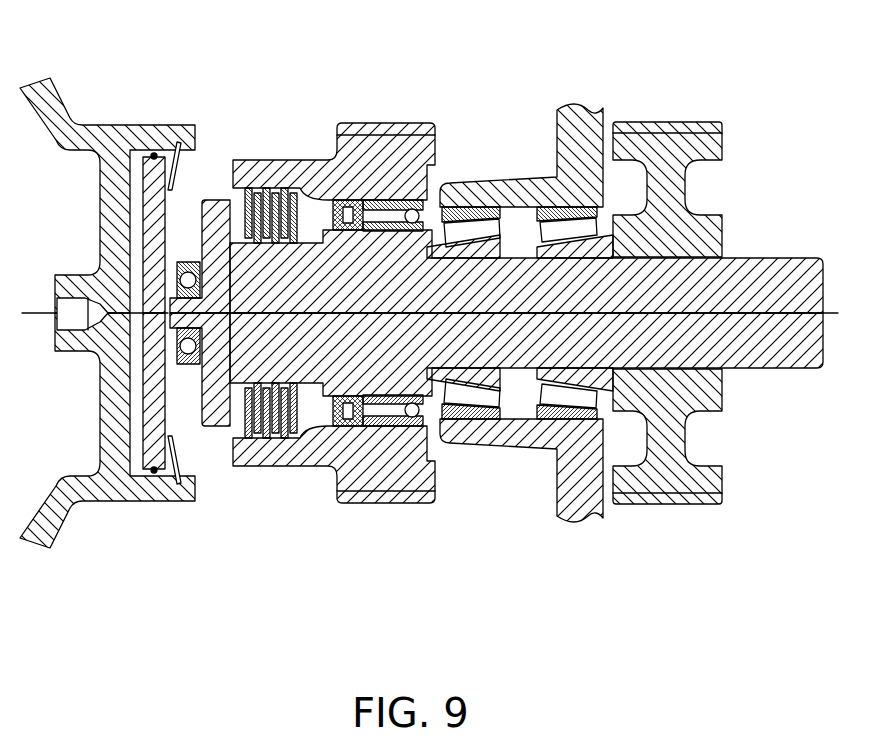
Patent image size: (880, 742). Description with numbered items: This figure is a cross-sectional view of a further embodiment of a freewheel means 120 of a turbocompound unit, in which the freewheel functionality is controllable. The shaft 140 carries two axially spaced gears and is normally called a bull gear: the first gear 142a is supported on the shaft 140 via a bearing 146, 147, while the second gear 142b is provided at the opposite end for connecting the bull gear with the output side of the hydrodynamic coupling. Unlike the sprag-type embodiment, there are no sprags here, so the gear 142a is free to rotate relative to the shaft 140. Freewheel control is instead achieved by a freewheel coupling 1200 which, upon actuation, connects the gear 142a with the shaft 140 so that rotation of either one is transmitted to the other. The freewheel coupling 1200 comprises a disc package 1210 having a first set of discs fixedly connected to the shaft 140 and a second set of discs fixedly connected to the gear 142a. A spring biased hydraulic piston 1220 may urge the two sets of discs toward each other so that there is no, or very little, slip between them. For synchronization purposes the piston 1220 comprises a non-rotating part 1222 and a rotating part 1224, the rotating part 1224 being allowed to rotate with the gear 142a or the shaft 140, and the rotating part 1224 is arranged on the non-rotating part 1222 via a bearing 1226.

The shaft 140 is at (790, 280).
The freewheel means 120 is at (278, 160).
The first gear 142a is at (420, 136).
The second gear 142b is at (677, 143).
The roller bearing 146 is at (352, 198).
The ball bearing 147 is at (417, 197).
The freewheel coupling 1200 is at (179, 334).
The disc package 1210 is at (287, 440).
The spring biased hydraulic piston 1220 is at (152, 397).
The non-rotating part 1222 is at (153, 203).
The rotating part 1224 is at (217, 198).
The bearing 1226 is at (177, 350).